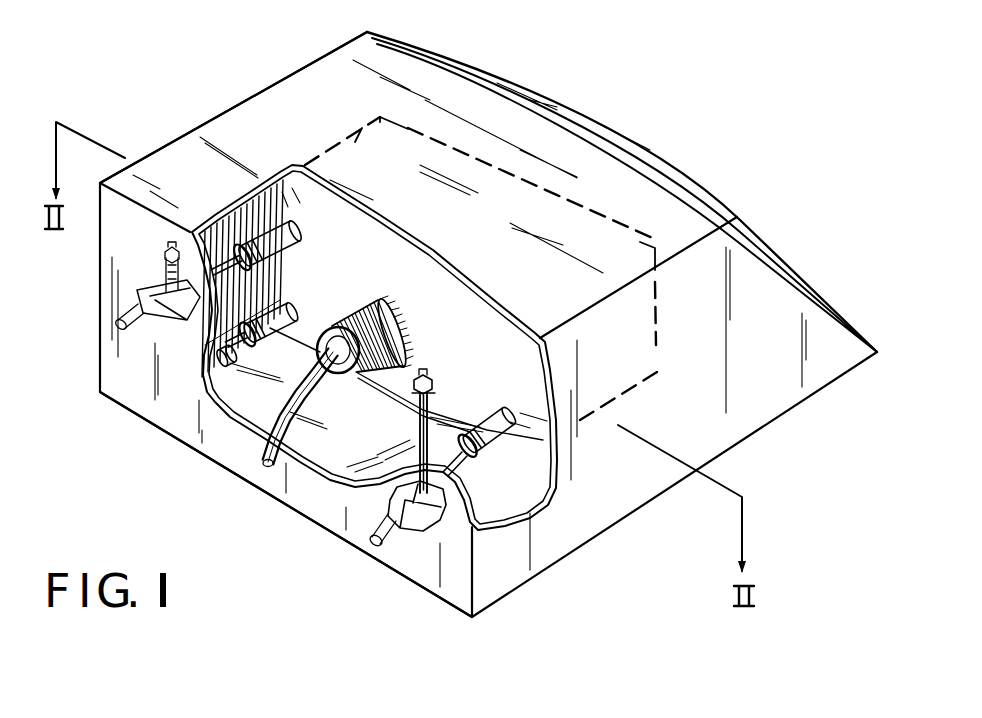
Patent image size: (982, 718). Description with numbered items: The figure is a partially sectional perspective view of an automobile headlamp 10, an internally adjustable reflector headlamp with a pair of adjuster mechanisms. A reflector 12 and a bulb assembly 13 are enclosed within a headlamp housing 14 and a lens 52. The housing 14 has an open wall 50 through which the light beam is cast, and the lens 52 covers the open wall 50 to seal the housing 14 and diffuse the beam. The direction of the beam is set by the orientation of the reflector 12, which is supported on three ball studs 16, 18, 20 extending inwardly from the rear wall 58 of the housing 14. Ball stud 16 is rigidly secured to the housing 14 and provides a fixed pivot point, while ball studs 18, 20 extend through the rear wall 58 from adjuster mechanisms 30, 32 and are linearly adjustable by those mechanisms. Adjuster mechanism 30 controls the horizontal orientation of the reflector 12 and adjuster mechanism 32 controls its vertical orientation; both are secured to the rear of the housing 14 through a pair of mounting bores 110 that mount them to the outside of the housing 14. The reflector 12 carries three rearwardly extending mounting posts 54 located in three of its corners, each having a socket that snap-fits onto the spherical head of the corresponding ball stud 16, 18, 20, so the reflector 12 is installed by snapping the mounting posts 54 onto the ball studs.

The headlamp 10 is at (708, 88).
The reflector 12 is at (350, 400).
The bulb assembly 13 is at (398, 316).
The headlamp housing 14 is at (228, 108).
The ball stud 16 is at (240, 352).
The ball stud 18 is at (450, 445).
The ball stud 20 is at (228, 240).
The adjuster mechanism 30 is at (410, 532).
The adjuster mechanism 32 is at (165, 335).
The open wall 50 is at (657, 242).
The lens 52 is at (663, 157).
The mounting posts 54 is at (296, 228).
The rear wall 58 is at (320, 512).
The mounting bores 110 is at (447, 494).